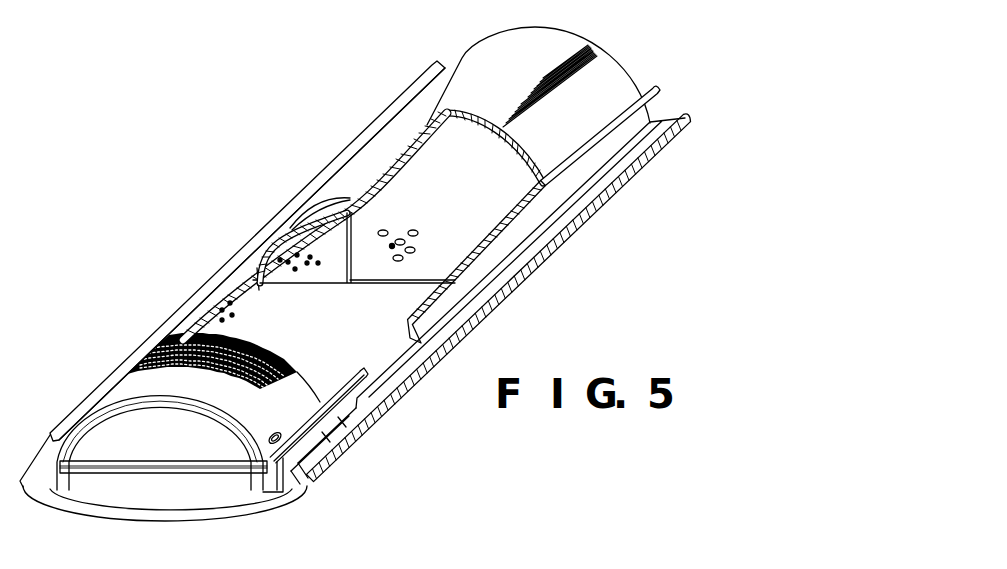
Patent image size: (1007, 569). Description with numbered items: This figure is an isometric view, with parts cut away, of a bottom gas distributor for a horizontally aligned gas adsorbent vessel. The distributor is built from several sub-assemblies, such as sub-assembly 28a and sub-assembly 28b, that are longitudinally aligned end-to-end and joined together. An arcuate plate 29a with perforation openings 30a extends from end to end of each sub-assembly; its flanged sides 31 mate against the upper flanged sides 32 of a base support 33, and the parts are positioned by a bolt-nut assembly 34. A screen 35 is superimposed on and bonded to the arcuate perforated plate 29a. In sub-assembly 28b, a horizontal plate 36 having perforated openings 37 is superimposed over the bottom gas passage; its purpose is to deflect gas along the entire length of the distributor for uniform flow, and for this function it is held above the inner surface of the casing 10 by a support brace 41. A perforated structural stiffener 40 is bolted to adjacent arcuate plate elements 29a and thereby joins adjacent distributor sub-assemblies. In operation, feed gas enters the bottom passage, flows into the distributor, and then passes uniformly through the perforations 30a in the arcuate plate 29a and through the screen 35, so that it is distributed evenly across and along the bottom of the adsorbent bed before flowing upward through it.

The casing 10 is at (113, 511).
The distributor sub-assembly 28a is at (223, 290).
The distributor sub-assembly 28b is at (388, 140).
The arcuate plate 29a is at (190, 310).
The perforation openings 30a is at (220, 303).
The flanged sides 31 is at (315, 417).
The upper flanged sides 32 is at (360, 432).
The base support 33 is at (340, 453).
The bolt-nut assembly 34 is at (311, 482).
The screen 35 is at (157, 340).
The horizontal plate 36 is at (445, 254).
The perforated openings 37 is at (392, 246).
The perforated structural stiffener 40 is at (317, 263).
The support brace 41 is at (262, 293).